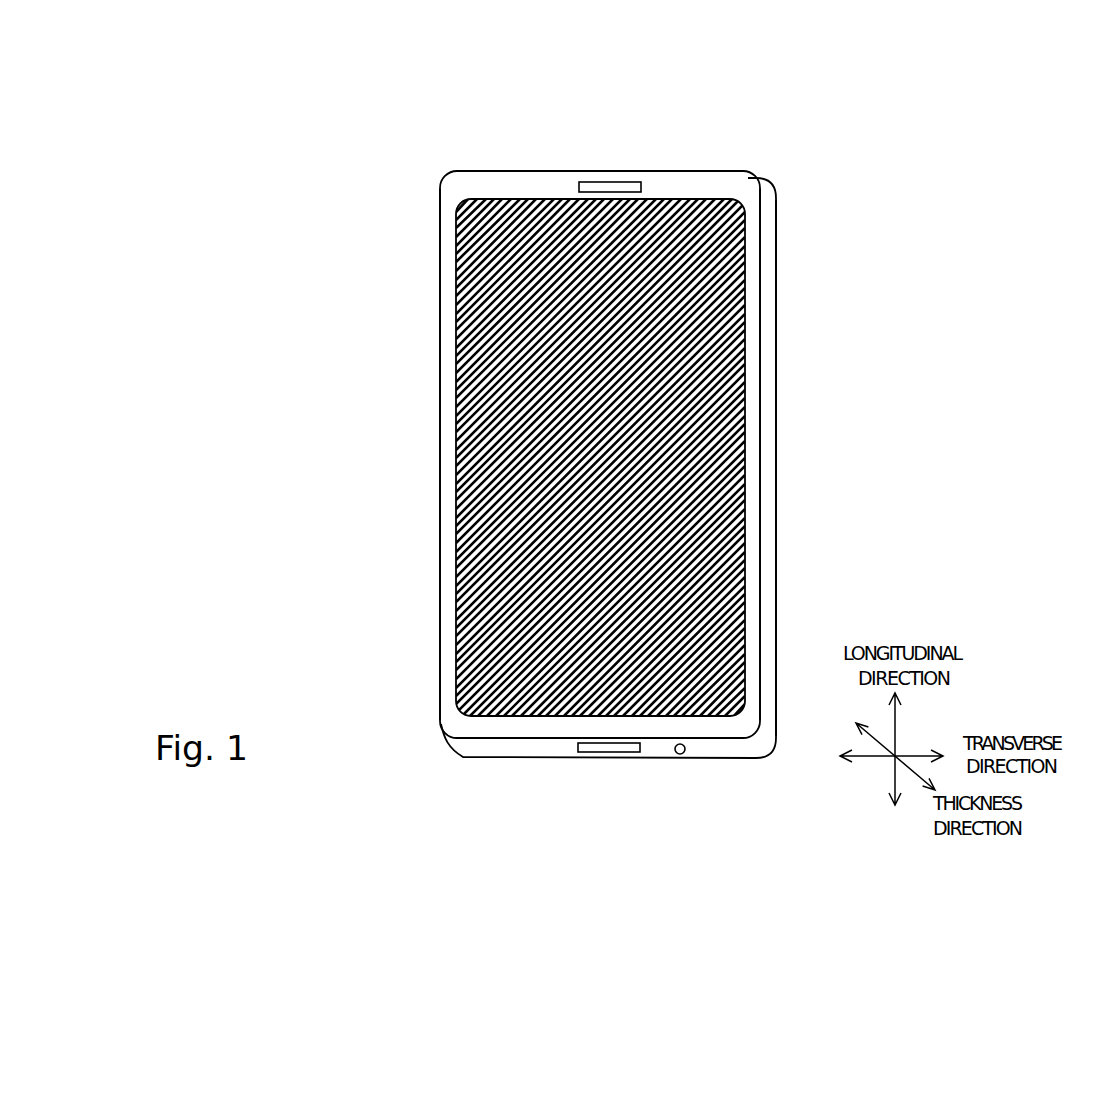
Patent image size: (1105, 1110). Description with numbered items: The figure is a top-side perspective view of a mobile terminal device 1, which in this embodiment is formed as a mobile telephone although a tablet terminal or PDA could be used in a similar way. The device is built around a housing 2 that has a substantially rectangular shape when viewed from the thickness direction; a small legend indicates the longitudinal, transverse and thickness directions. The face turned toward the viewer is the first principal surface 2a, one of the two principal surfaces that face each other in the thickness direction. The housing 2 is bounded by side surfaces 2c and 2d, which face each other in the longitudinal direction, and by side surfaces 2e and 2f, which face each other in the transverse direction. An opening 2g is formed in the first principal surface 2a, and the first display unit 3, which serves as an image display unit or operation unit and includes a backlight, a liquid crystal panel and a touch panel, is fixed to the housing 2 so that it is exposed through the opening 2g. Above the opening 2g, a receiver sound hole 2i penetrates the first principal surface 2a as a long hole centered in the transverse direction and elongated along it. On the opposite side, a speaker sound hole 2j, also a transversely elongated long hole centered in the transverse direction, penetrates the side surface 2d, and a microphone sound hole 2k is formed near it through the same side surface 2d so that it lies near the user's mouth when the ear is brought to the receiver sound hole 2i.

The mobile terminal device 1 is at (898, 123).
The housing 2 is at (784, 398).
The first principal surface 2a is at (437, 450).
The side surface 2c is at (652, 162).
The side surface 2d is at (498, 742).
The side surface 2e is at (432, 363).
The side surface 2f is at (758, 487).
The opening 2g is at (735, 335).
The receiver sound hole 2i is at (595, 173).
The speaker sound hole 2j is at (597, 742).
The microphone sound hole 2k is at (673, 746).
The first display unit 3 is at (737, 282).